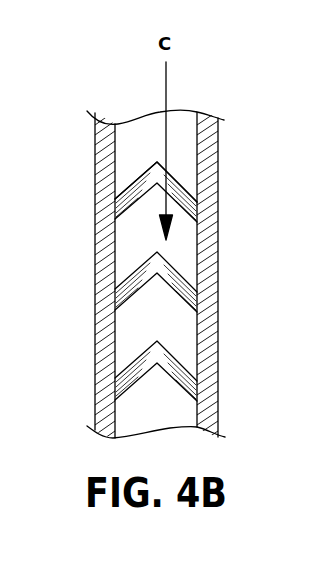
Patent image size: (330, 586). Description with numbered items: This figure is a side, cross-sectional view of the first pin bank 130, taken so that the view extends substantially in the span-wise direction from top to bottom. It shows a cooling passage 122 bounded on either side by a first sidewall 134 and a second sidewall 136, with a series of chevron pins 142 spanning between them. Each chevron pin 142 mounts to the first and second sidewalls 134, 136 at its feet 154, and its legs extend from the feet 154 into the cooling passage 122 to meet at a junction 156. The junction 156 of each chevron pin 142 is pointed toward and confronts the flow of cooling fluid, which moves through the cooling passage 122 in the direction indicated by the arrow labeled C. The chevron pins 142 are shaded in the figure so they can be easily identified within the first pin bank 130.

The cooling passage 122 is at (155, 251).
The first pin bank 130 is at (124, 167).
The first sidewall 134 is at (219, 279).
The second sidewall 136 is at (97, 271).
The chevron pin 142 is at (193, 210).
The foot 154 is at (118, 218).
The junction 156 is at (158, 162).